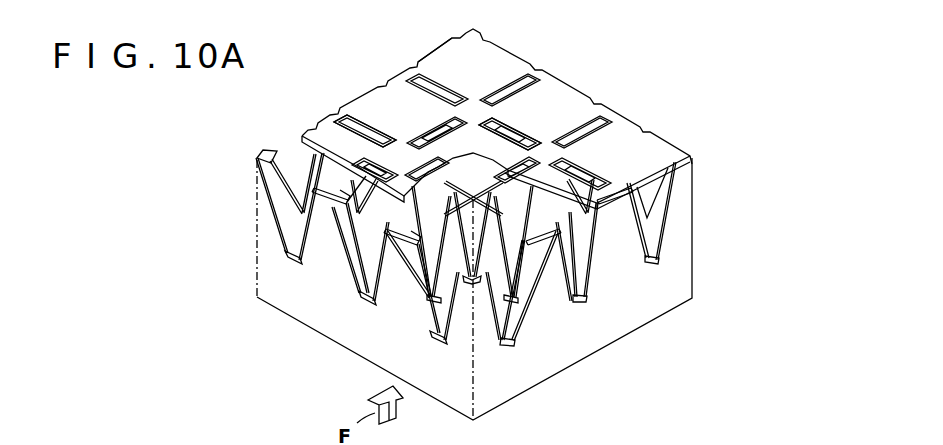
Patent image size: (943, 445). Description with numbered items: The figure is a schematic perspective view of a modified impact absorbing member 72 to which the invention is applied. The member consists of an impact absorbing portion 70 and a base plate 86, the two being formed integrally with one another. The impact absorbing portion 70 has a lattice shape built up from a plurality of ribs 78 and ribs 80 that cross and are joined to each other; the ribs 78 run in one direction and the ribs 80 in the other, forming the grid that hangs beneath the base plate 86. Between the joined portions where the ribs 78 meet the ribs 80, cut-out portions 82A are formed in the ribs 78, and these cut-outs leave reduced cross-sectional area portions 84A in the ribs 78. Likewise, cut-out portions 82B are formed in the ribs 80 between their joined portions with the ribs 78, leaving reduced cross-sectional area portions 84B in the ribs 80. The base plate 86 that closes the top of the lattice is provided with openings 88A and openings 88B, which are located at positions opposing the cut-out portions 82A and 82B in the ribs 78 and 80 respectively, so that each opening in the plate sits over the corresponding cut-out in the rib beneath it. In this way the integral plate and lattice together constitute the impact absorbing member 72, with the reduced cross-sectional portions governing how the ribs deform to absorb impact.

The impact absorbing portion 70 is at (283, 344).
The impact absorbing member 72 is at (684, 72).
The rib 78 is at (275, 300).
The rib 80 is at (285, 250).
The cut-out portion 82A is at (292, 238).
The cut-out portion 82B is at (358, 262).
The reduced cross-sectional area portion 84A is at (320, 207).
The reduced cross-sectional area portion 84B is at (418, 237).
The base plate 86 is at (500, 70).
The opening 88A is at (400, 73).
The opening 88B is at (553, 82).